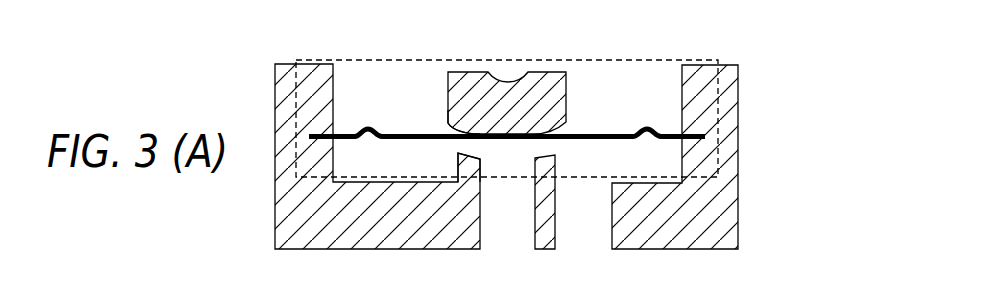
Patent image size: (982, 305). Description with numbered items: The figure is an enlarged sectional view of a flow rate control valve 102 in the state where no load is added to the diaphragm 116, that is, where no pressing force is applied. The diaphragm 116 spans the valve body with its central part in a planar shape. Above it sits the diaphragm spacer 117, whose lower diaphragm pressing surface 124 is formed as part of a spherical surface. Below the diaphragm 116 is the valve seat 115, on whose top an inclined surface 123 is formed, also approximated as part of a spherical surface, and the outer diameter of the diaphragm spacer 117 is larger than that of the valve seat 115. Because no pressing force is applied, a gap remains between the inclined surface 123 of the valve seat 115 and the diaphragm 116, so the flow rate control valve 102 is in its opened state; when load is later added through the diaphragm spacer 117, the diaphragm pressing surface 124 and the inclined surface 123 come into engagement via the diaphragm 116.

The flow rate control valve 102 is at (648, 60).
The valve seat 115 is at (547, 170).
The diaphragm 116 is at (410, 134).
The diaphragm spacer 117 is at (542, 93).
The inclined surface 123 is at (549, 151).
The diaphragm pressing surface 124 is at (470, 125).